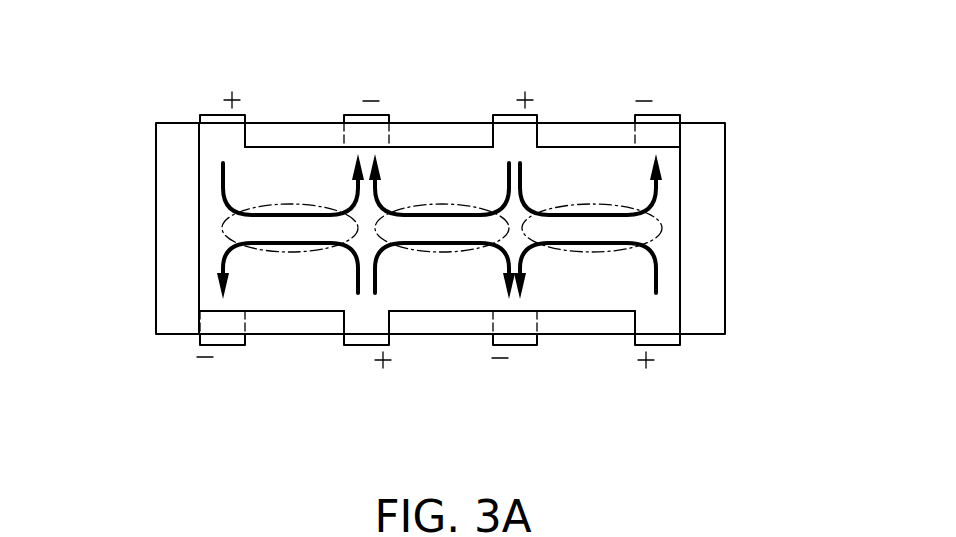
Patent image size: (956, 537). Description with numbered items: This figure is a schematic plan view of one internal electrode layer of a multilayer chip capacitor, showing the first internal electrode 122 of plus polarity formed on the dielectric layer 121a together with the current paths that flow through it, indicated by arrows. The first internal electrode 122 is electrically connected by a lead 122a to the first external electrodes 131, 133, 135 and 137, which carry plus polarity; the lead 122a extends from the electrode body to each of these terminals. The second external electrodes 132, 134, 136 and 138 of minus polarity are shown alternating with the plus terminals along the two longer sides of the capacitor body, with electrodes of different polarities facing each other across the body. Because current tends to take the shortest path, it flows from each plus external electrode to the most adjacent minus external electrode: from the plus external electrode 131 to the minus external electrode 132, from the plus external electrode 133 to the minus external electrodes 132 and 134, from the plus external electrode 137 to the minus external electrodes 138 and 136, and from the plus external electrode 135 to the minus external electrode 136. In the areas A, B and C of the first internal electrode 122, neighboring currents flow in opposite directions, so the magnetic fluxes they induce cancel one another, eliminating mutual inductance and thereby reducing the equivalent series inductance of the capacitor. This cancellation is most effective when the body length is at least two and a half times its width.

The dielectric layer 121a is at (715, 177).
The first internal electrode 122 is at (416, 165).
The lead 122a is at (240, 133).
The first external electrode 131 is at (214, 118).
The second external electrode 132 is at (360, 117).
The first external electrode 133 is at (511, 117).
The second external electrode 134 is at (659, 117).
The first external electrode 135 is at (662, 342).
The second external electrode 136 is at (517, 342).
The first external electrode 137 is at (362, 342).
The second external electrode 138 is at (223, 342).
The area A is at (222, 226).
The area B is at (433, 203).
The area C is at (662, 223).